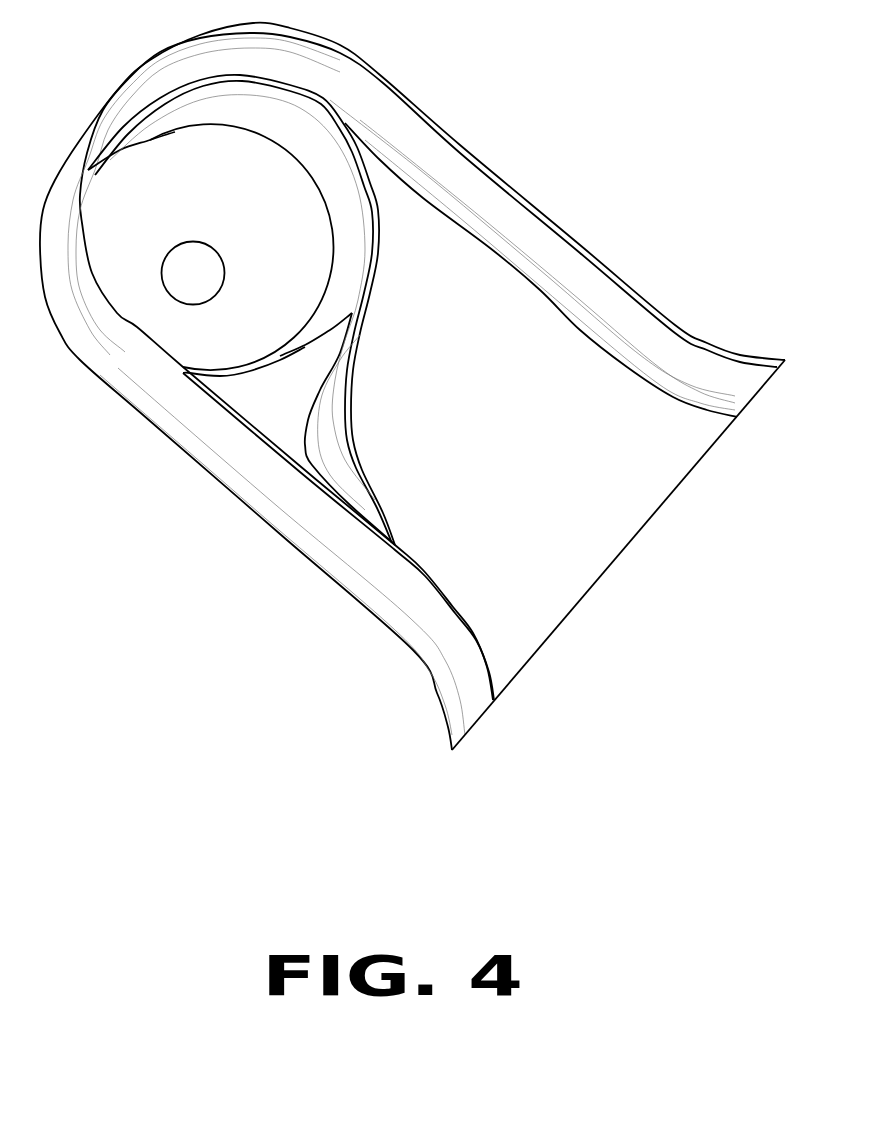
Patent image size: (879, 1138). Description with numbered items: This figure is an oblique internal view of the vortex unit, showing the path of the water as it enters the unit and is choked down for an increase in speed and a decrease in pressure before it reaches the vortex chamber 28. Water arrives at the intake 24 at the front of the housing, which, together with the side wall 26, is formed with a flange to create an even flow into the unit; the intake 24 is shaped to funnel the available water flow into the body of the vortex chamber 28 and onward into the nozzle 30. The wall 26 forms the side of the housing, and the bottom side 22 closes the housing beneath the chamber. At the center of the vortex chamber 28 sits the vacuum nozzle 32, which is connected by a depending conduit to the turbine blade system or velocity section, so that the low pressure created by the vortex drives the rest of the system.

The bottom side 22 is at (577, 503).
The intake 24 is at (550, 595).
The wall 26 is at (540, 215).
The vortex chamber 28 is at (242, 212).
The nozzle 30 is at (112, 120).
The vacuum nozzle 32 is at (212, 293).